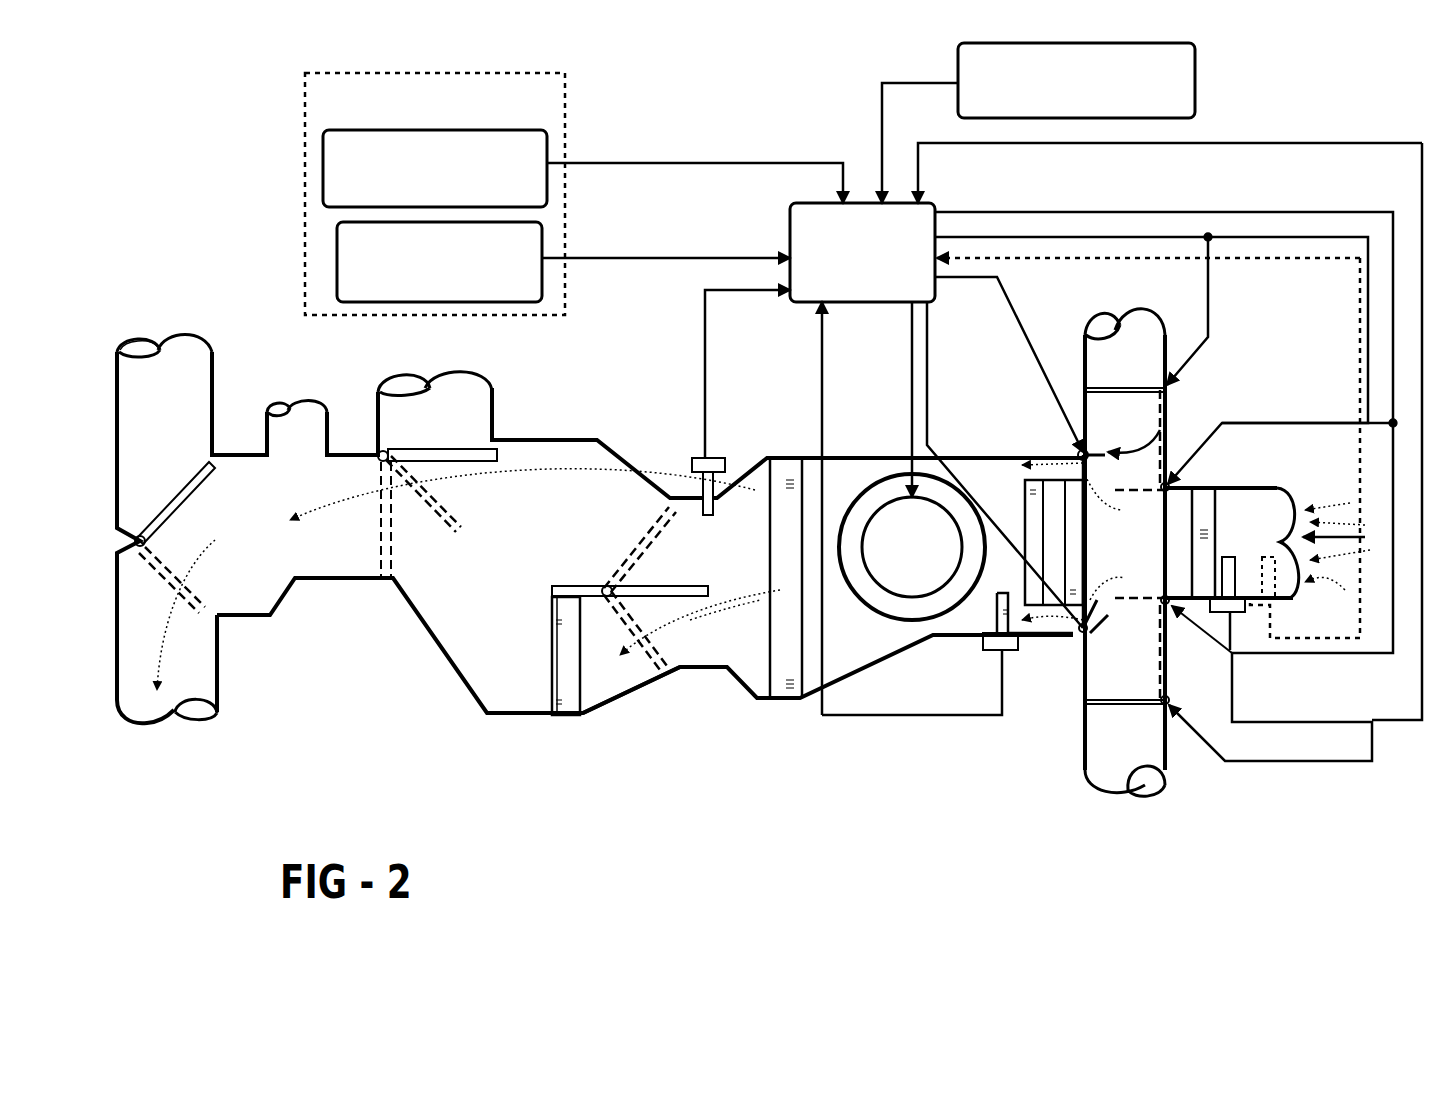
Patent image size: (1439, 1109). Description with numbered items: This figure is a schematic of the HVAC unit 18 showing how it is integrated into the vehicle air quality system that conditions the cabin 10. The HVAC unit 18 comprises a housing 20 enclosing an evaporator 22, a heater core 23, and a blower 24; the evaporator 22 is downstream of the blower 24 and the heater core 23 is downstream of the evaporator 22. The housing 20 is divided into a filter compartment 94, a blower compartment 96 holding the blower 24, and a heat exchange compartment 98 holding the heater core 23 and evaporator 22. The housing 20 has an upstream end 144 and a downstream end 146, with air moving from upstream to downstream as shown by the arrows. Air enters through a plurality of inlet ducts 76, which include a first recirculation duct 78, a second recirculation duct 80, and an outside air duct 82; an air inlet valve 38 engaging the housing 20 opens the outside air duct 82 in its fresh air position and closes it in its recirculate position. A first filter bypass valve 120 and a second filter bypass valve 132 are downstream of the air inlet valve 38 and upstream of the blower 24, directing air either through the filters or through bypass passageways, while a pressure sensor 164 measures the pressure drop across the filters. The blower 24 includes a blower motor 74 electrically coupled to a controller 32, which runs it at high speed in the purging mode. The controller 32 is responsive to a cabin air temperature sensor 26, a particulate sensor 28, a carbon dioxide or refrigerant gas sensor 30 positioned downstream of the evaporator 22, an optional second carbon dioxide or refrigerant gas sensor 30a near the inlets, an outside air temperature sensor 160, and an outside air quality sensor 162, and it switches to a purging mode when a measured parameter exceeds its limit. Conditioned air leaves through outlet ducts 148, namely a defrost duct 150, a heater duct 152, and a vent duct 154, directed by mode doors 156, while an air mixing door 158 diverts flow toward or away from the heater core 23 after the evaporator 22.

The cabin 10 is at (566, 92).
The cabin air temperature sensor 26 is at (583, 168).
The particulate sensor 28 is at (563, 262).
The controller 32 is at (790, 226).
The outside air temperature sensor 160 is at (1038, 123).
The inlet ducts 76 is at (1302, 330).
The first recirculation duct 78 is at (1118, 305).
The outlet ducts 148 is at (310, 337).
The defrost duct 150 is at (158, 340).
The heater duct 152 is at (170, 738).
The downstream end 146 is at (230, 626).
The mode doors 156 is at (450, 467).
The vent duct 154 is at (427, 372).
The carbon dioxide or refrigerant gas sensor 30 is at (690, 462).
The air mixing door 158 is at (655, 690).
The heater core 23 is at (563, 690).
The evaporator 22 is at (790, 690).
The heat exchange compartment 98 is at (725, 628).
The blower compartment 96 is at (912, 508).
The blower motor 74 is at (912, 461).
The blower 24 is at (883, 620).
The filter compartment 94 is at (1046, 540).
The pressure sensor 164 is at (1003, 650).
The second filter bypass valve 132 is at (1108, 622).
The first filter bypass valve 120 is at (1166, 430).
The outside air quality sensor 162 is at (1230, 650).
The air inlet valve 38 is at (1180, 545).
The second carbon dioxide or refrigerant gas sensor 30a is at (1250, 600).
The outside air duct 82 is at (1303, 550).
The upstream end 144 is at (1252, 660).
The second recirculation duct 80 is at (1130, 797).
The housing 20 is at (443, 660).
The HVAC unit 18 is at (610, 783).